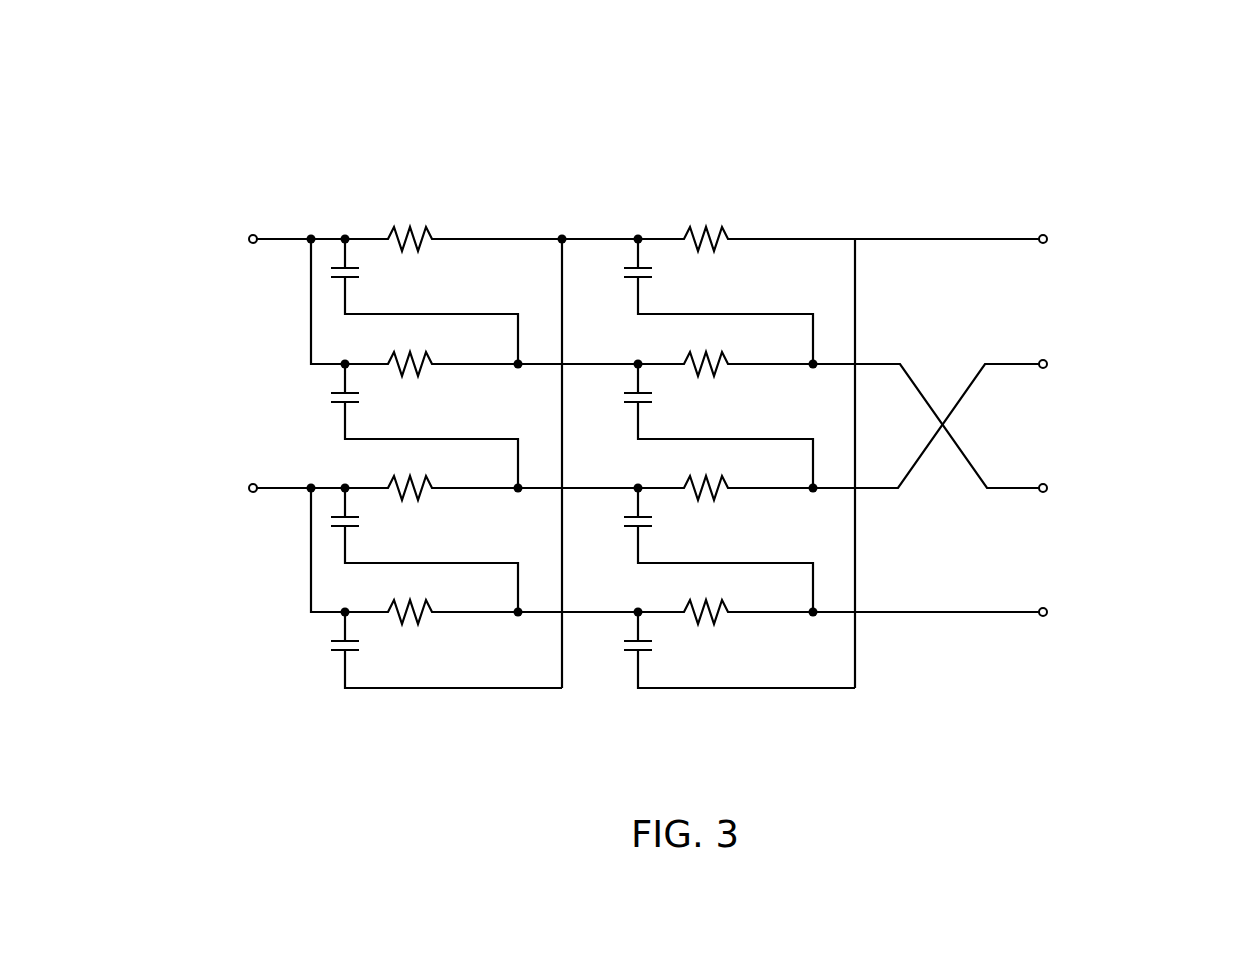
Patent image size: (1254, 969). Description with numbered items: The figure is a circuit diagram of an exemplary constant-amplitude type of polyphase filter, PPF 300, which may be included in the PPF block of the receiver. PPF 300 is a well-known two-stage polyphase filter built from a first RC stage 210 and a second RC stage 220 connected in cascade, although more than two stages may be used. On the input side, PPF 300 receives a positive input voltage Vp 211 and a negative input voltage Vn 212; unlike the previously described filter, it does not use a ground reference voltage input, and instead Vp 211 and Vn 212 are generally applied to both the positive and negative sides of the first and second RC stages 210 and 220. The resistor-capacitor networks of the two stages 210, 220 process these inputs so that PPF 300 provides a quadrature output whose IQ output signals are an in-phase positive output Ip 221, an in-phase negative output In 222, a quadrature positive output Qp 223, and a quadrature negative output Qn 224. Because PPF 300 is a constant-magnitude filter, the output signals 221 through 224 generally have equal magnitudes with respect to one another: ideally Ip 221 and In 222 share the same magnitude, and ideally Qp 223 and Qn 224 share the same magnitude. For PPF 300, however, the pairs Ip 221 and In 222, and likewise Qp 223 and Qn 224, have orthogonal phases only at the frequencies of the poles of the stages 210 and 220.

The constant-amplitude polyphase filter (PPF) 300 is at (1118, 103).
The first RC stage 210 is at (574, 207).
The second RC stage 220 is at (865, 207).
The Vp 211 is at (248, 237).
The Vn 212 is at (248, 486).
The Ip 221 is at (1048, 237).
The In 222 is at (1048, 362).
The Qp 223 is at (1048, 486).
The Qn 224 is at (1048, 610).